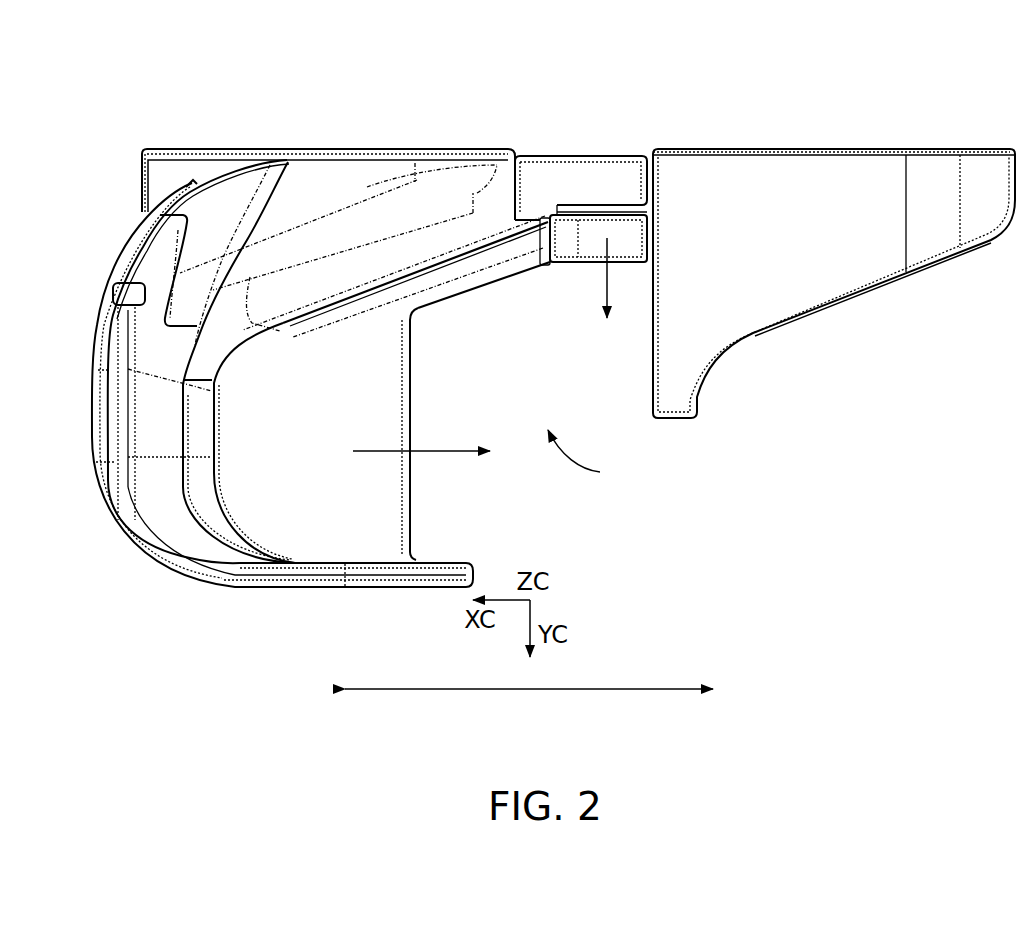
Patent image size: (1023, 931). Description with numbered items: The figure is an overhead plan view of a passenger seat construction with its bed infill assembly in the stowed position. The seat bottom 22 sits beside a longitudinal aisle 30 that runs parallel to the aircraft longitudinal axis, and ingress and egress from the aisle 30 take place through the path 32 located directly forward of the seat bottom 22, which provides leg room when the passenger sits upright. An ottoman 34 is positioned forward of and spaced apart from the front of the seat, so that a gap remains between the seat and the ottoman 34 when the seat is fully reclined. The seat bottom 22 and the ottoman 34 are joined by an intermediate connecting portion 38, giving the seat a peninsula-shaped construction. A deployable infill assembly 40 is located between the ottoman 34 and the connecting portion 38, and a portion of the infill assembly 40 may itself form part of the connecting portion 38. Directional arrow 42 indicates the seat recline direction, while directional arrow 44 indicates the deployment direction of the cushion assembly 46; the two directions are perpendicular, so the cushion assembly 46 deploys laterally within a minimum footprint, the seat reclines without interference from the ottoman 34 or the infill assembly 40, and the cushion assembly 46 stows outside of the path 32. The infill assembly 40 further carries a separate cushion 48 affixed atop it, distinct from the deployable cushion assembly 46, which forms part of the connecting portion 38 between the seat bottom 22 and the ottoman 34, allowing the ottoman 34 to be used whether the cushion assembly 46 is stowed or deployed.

The seat bottom 22 is at (306, 370).
The aisle 30 is at (633, 688).
The path 32 is at (593, 459).
The ottoman 34 is at (786, 188).
The connecting portion 38 is at (498, 262).
The deployable infill assembly 40 is at (617, 168).
The directional arrow 42 is at (445, 447).
The directional arrow 44 is at (600, 289).
The cushion assembly 46 is at (566, 240).
The cushion 48 is at (607, 190).